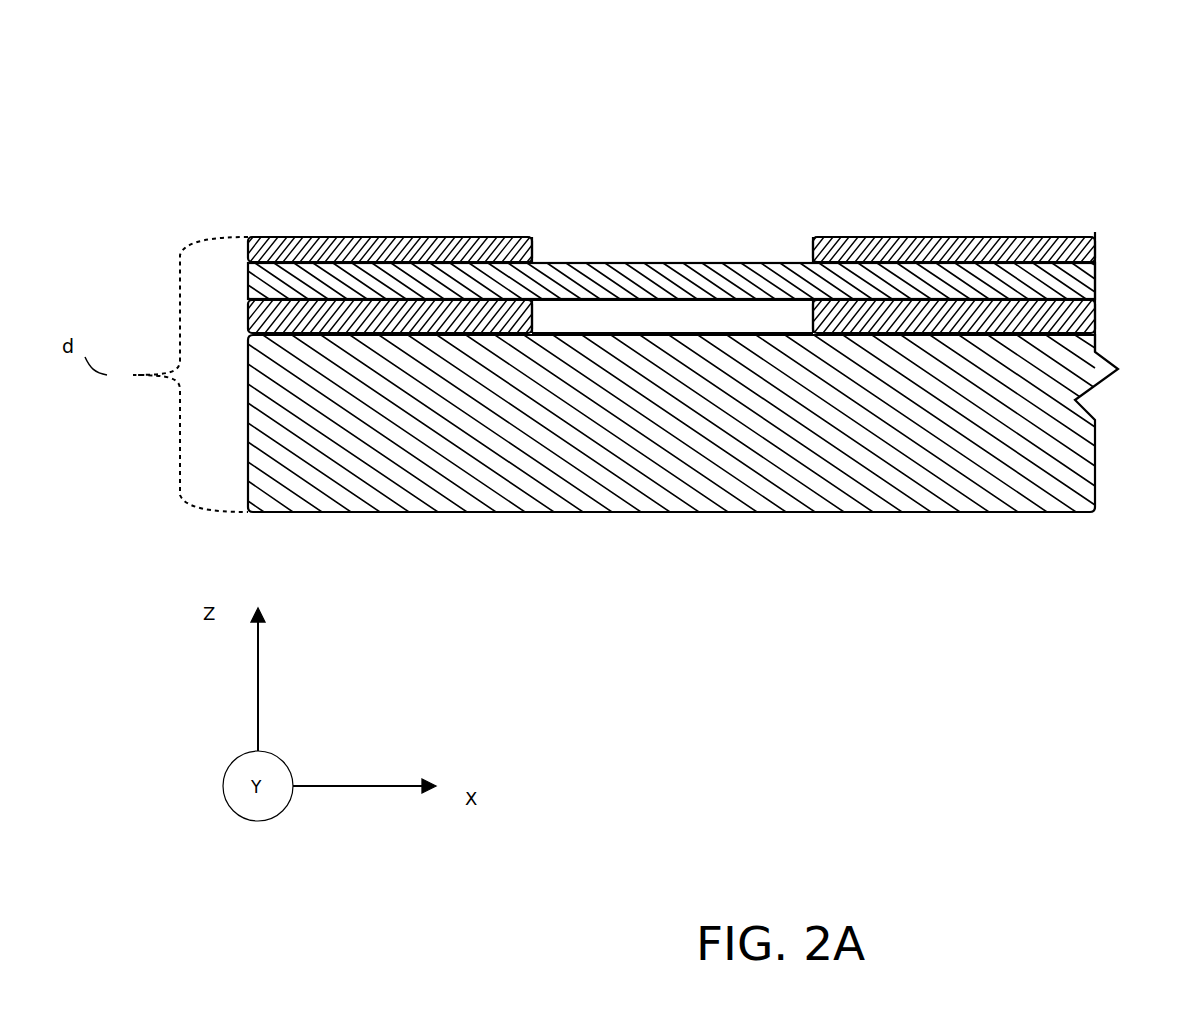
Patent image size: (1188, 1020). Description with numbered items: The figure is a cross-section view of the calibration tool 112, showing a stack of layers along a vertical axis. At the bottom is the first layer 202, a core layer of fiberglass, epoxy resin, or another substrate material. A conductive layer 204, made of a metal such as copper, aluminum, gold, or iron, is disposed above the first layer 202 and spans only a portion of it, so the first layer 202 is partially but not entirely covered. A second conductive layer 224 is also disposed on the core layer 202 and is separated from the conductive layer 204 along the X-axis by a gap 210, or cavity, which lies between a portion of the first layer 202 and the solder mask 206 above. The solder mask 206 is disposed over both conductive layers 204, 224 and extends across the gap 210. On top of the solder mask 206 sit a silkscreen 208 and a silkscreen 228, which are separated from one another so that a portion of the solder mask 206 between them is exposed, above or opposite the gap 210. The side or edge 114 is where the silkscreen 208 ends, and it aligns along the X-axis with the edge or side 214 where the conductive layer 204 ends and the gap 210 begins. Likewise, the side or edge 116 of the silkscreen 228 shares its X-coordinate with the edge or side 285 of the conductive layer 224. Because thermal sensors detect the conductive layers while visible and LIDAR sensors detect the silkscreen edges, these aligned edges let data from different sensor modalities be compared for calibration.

The calibration tool 112 is at (1094, 67).
The side or edge 114 is at (533, 245).
The side or edge 116 is at (812, 250).
The first layer 202 is at (247, 421).
The conductive layer 204 is at (247, 326).
The solder mask 206 is at (247, 290).
The silkscreen 208 is at (385, 236).
The gap 210 is at (690, 329).
The edge or side 214 is at (533, 324).
The conductive layer 224 is at (1096, 320).
The silkscreen 228 is at (940, 236).
The edge or side 285 is at (812, 326).